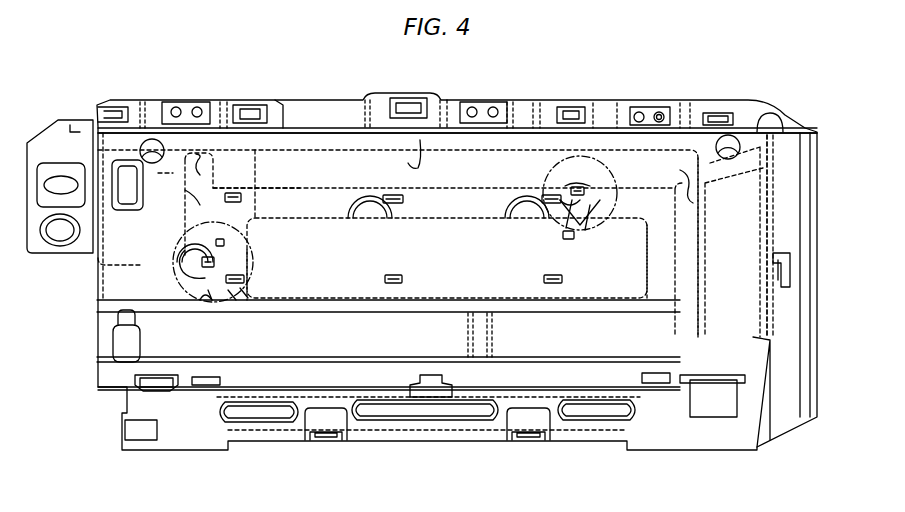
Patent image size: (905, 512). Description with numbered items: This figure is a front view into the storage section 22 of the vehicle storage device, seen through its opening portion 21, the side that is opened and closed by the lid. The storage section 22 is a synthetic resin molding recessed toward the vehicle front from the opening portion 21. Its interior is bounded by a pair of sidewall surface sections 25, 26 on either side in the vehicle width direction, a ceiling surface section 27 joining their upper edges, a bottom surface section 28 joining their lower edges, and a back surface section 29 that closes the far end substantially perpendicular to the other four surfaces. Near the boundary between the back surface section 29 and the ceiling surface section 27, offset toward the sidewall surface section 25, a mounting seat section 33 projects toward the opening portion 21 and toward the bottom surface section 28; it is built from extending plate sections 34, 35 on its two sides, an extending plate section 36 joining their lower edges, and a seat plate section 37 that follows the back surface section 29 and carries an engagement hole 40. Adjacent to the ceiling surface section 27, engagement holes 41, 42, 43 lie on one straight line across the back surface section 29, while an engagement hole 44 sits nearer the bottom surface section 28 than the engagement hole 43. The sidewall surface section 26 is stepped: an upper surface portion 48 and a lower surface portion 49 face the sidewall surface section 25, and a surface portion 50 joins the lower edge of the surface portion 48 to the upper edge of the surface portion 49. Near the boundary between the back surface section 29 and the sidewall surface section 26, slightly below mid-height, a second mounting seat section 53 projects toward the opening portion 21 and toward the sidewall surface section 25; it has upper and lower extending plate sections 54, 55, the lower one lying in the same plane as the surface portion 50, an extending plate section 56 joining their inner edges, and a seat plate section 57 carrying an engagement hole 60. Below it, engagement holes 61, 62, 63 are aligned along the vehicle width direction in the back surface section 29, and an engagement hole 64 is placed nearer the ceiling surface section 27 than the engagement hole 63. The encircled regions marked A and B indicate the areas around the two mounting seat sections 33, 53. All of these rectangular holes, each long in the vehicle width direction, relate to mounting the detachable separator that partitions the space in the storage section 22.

The opening portion 21 is at (422, 275).
The storage section 22 is at (322, 156).
The sidewall surface section 25 is at (757, 137).
The sidewall surface section 26 is at (212, 187).
The ceiling surface section 27 is at (420, 140).
The bottom surface section 28 is at (435, 400).
The back surface section 29 is at (665, 270).
The mounting seat section 33 is at (576, 186).
The extending plate section 34 is at (605, 205).
The extending plate section 35 is at (574, 196).
The extending plate section 36 is at (667, 255).
The seat plate section 37 is at (579, 187).
The engagement hole 40 is at (592, 200).
The engagement hole 41 is at (548, 196).
The engagement hole 42 is at (393, 195).
The engagement hole 43 is at (233, 193).
The engagement hole 44 is at (221, 239).
The surface portion 48 is at (197, 210).
The surface portion 49 is at (176, 302).
The surface portion 50 is at (200, 270).
The mounting seat section 53 is at (248, 258).
The extending plate section 54 is at (200, 262).
The extending plate section 55 is at (205, 278).
The extending plate section 56 is at (245, 283).
The seat plate section 57 is at (213, 272).
The engagement hole 60 is at (220, 286).
The engagement hole 61 is at (236, 286).
The engagement hole 62 is at (393, 283).
The engagement hole 63 is at (552, 283).
The engagement hole 64 is at (568, 240).
The detail region A is at (610, 168).
The detail region B is at (175, 280).